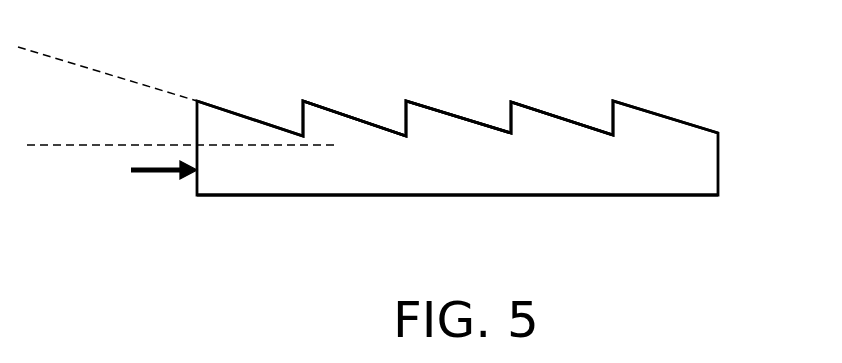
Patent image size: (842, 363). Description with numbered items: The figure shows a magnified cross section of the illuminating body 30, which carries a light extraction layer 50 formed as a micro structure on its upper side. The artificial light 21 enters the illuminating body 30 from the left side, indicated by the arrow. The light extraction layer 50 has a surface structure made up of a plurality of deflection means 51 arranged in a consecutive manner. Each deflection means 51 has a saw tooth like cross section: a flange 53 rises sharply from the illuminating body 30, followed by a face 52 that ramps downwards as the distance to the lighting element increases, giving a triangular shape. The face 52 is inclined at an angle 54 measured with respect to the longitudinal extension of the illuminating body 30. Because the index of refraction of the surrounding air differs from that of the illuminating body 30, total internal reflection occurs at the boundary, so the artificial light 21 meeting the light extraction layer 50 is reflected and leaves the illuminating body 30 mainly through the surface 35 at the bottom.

The artificial light 21 is at (162, 173).
The illuminating body 30 is at (698, 165).
The surface 35 is at (500, 195).
The light extraction layer 50 is at (686, 102).
The deflection means 51 is at (560, 137).
The face 52 is at (468, 120).
The flange 53 is at (370, 119).
The angle 54 is at (65, 118).